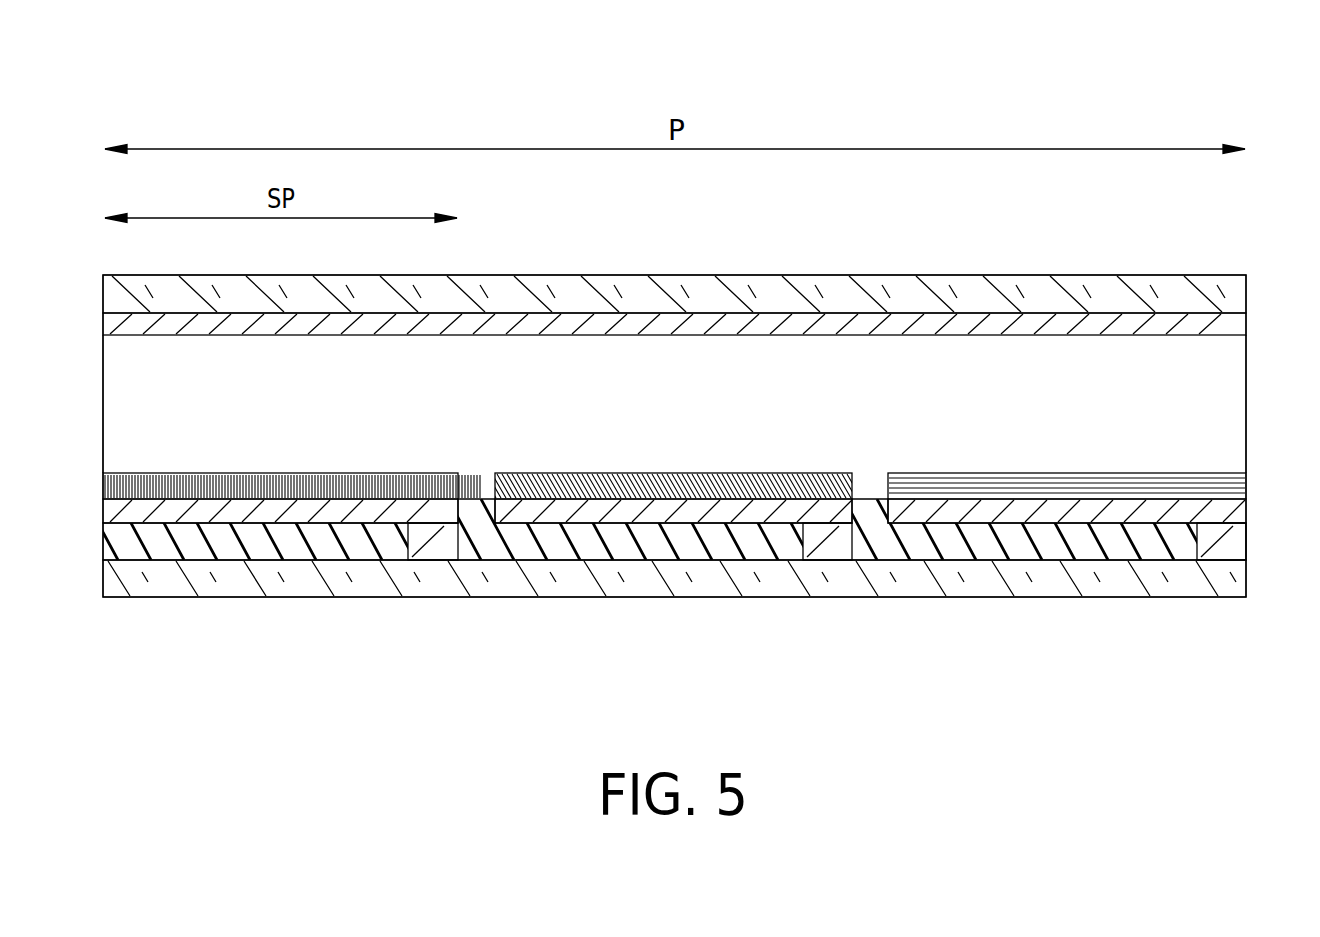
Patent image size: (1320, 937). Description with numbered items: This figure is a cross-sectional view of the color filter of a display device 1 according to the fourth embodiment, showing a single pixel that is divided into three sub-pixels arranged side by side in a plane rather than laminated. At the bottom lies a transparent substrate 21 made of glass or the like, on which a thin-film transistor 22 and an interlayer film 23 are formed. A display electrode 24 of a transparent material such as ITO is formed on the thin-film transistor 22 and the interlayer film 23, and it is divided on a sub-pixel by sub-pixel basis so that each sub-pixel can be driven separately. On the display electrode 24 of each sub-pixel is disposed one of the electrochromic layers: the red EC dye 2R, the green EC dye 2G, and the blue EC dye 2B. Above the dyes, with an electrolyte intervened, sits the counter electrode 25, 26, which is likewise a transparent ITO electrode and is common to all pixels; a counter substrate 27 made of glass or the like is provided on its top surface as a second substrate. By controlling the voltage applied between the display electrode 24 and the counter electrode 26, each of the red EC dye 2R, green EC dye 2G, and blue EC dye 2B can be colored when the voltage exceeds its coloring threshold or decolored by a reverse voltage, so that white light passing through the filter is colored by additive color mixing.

The display device 1 is at (1305, 82).
The transparent substrate 21 is at (1230, 579).
The thin-film transistor 22 is at (818, 545).
The interlayer film 23 is at (545, 550).
The display electrode 24 is at (172, 510).
The counter electrode 25 is at (114, 407).
The counter electrode 26 is at (1228, 323).
The counter substrate 27 is at (1227, 297).
The red EC dye 2R is at (265, 487).
The green EC dye 2G is at (677, 488).
The blue EC dye 2B is at (1118, 488).